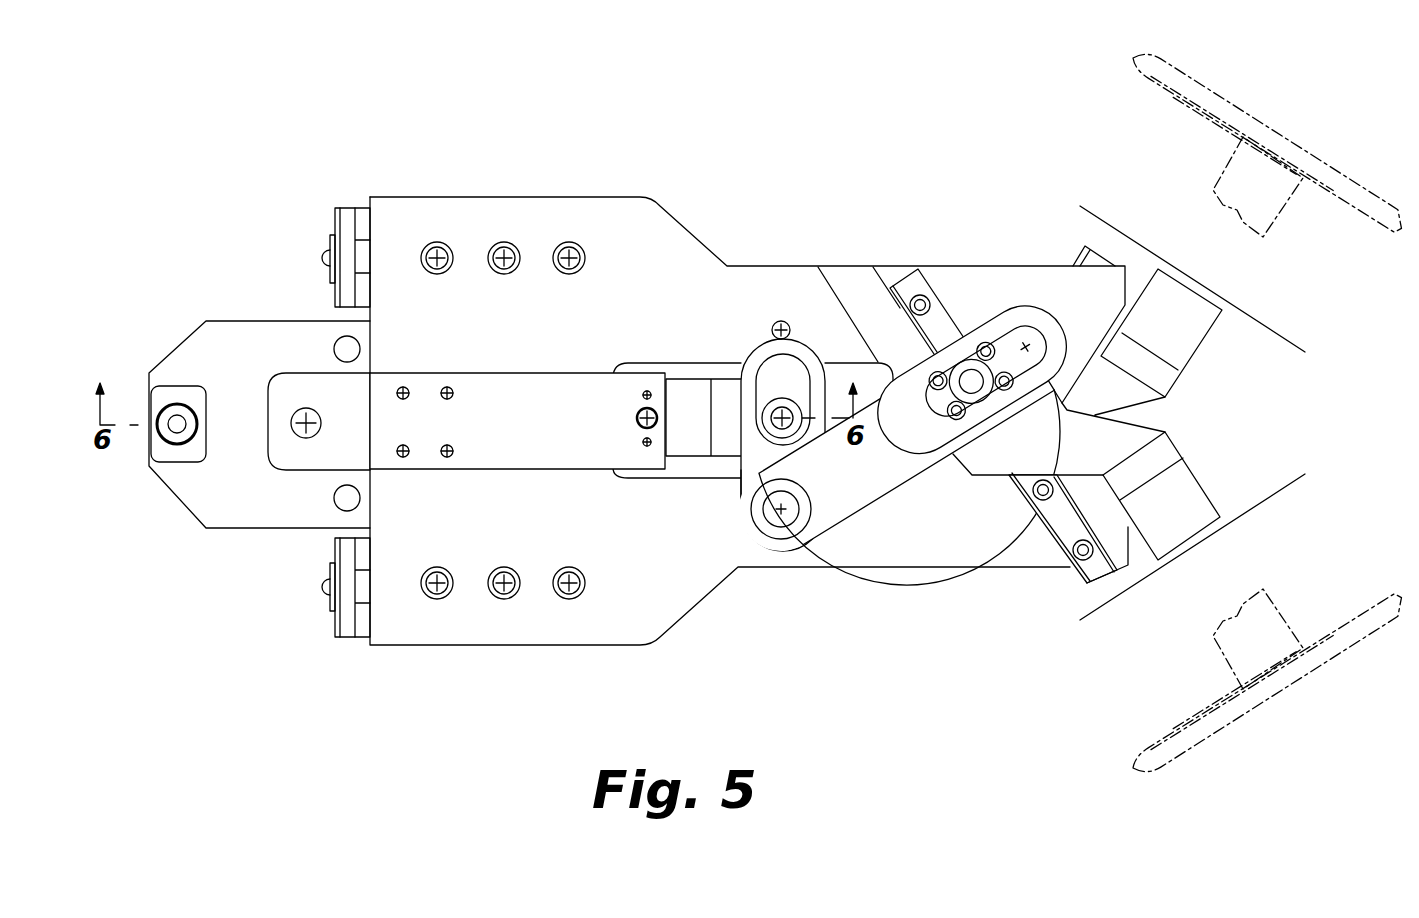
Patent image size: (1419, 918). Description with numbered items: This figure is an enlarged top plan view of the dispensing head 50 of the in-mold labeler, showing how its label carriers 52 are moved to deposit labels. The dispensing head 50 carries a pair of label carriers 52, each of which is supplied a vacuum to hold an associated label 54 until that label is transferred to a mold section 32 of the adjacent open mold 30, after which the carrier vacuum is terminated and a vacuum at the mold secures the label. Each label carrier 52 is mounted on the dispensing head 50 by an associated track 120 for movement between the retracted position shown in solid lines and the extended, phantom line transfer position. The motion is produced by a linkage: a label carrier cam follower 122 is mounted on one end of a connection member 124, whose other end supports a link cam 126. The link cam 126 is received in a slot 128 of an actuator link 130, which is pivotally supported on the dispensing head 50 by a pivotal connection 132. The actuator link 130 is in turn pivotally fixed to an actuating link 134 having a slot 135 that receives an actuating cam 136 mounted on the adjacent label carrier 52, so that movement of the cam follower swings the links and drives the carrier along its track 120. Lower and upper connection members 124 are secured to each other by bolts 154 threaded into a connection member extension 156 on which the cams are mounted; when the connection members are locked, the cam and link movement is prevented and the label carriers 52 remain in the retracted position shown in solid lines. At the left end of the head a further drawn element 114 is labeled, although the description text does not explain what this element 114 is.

The mold 30 is at (1352, 167).
The mold section 32 is at (1283, 120).
The dispensing head 50 is at (750, 264).
The label carrier 52 is at (1160, 288).
The label 54 is at (1340, 203).
The pivot bushing 114 is at (187, 406).
The track 120 is at (1037, 513).
The label carrier cam follower 122 is at (311, 410).
The connection member 124 is at (585, 392).
The link cam 126 is at (751, 507).
The slot 128 is at (767, 376).
The actuator link 130 is at (748, 410).
The pivotal connection 132 is at (783, 320).
The actuating link 134 is at (871, 477).
The slot 135 is at (936, 377).
The actuating cam 136 is at (1017, 342).
The bolt 154 is at (645, 428).
The connection member extension 156 is at (688, 391).